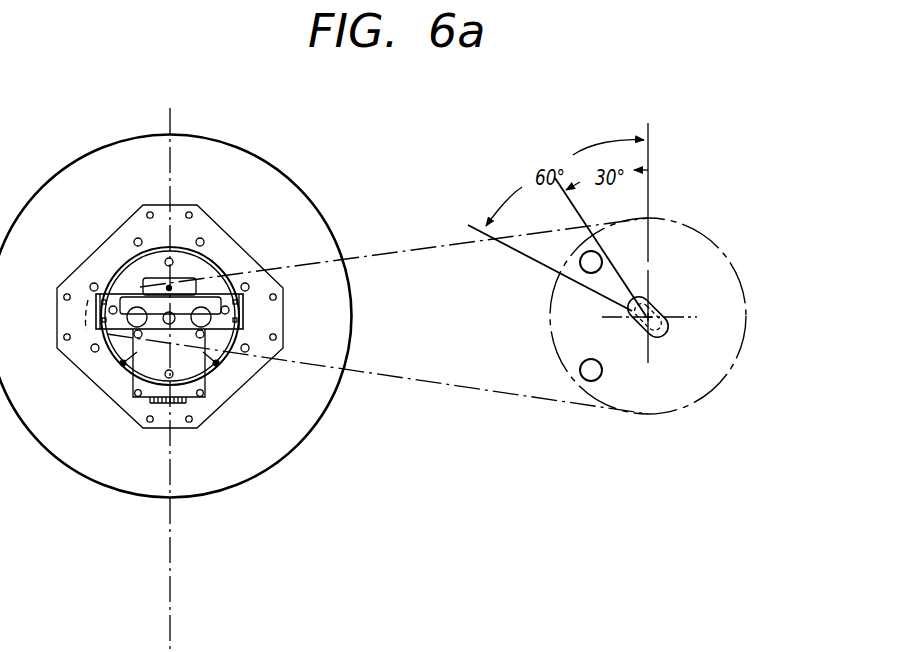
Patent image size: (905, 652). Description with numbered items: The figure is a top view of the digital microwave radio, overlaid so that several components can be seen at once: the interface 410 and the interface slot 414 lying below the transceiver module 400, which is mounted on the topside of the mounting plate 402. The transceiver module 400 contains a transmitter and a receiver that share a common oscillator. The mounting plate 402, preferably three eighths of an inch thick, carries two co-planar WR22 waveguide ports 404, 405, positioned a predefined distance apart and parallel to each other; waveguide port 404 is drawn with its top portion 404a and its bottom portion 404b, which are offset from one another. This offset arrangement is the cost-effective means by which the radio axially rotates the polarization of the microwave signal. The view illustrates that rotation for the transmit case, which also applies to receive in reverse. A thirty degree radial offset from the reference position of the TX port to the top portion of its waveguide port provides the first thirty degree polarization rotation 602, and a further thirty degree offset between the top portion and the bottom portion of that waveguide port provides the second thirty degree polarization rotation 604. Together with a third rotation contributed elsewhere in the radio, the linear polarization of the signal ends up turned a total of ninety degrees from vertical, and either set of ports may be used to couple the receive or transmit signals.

The transceiver module 400 is at (198, 366).
The mounting plate 402 is at (93, 152).
The waveguide port 404 is at (123, 363).
The top portion of waveguide port 404a is at (667, 332).
The bottom portion of waveguide port 404b is at (650, 300).
The waveguide port 405 is at (169, 288).
The interface 410 is at (237, 243).
The interface slot 414 is at (157, 308).
The first 30° polarization rotation 602 is at (610, 155).
The second thirty degree polarization rotation 604 is at (533, 210).